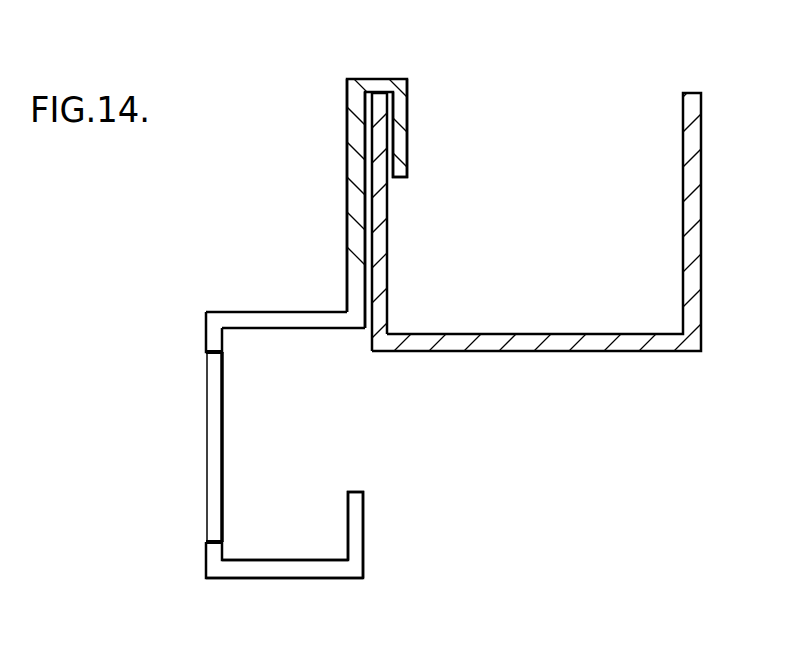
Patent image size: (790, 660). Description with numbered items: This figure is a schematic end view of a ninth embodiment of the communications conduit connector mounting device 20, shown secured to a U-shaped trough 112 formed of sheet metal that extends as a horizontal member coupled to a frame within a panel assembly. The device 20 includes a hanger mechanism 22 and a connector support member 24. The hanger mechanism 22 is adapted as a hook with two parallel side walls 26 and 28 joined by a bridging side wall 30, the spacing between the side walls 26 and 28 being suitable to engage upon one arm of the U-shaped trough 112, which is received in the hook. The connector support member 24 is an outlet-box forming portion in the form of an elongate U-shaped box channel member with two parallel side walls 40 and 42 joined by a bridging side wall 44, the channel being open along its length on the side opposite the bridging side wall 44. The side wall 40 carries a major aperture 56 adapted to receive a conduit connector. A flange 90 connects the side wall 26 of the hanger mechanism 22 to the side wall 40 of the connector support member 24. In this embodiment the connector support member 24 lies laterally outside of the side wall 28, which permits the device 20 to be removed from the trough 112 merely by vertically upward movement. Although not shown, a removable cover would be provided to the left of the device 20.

The communications conduit connector mounting device 20 is at (191, 298).
The hanger mechanism 22 is at (304, 183).
The connector support member 24 is at (167, 315).
The side wall 26 is at (347, 137).
The side wall 28 is at (406, 145).
The bridging side wall 30 is at (377, 79).
The side wall 40 is at (222, 416).
The side wall 42 is at (364, 518).
The bridging side wall 44 is at (277, 567).
The major aperture 56 is at (222, 496).
The flange 90 is at (307, 312).
The trough 112 is at (540, 358).